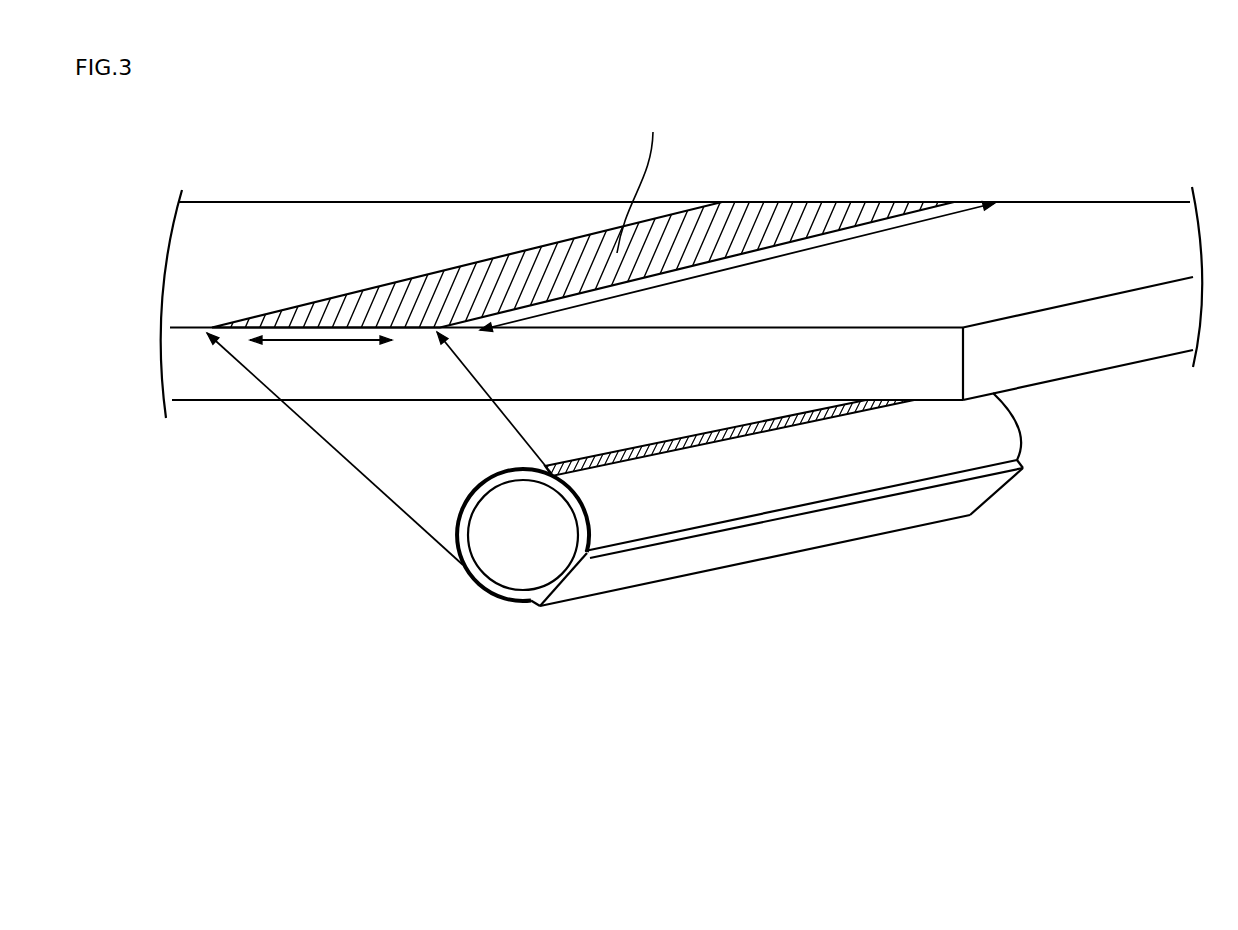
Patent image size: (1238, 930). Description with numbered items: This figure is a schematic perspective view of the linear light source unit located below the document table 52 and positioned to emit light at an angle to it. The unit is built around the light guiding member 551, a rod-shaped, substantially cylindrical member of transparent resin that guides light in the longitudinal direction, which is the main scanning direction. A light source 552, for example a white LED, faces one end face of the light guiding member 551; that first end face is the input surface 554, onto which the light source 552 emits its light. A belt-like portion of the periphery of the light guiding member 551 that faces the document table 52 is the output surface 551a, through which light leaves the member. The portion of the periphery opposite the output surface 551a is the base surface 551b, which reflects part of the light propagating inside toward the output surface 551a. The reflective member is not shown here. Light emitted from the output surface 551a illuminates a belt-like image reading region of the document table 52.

The document table 52 is at (1157, 323).
The light guiding member 551 is at (779, 537).
The output surface 551a is at (477, 487).
The base surface 551b is at (797, 551).
The light source 552 is at (515, 563).
The input surface 554 is at (475, 587).